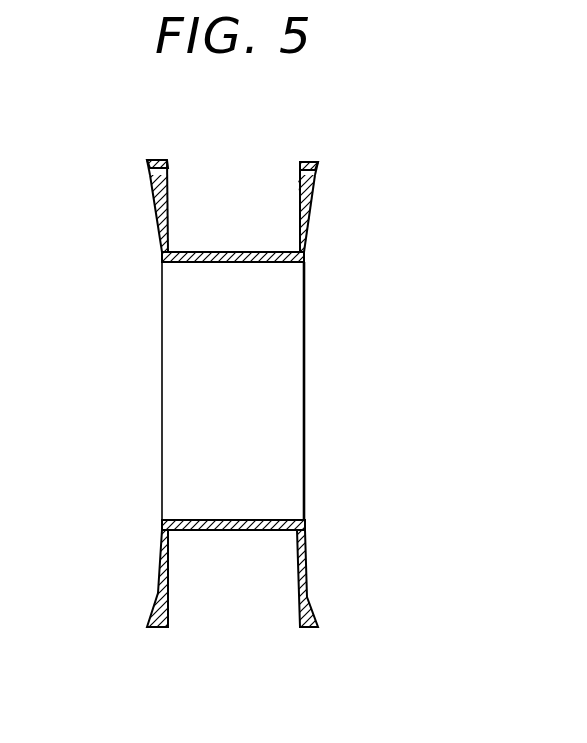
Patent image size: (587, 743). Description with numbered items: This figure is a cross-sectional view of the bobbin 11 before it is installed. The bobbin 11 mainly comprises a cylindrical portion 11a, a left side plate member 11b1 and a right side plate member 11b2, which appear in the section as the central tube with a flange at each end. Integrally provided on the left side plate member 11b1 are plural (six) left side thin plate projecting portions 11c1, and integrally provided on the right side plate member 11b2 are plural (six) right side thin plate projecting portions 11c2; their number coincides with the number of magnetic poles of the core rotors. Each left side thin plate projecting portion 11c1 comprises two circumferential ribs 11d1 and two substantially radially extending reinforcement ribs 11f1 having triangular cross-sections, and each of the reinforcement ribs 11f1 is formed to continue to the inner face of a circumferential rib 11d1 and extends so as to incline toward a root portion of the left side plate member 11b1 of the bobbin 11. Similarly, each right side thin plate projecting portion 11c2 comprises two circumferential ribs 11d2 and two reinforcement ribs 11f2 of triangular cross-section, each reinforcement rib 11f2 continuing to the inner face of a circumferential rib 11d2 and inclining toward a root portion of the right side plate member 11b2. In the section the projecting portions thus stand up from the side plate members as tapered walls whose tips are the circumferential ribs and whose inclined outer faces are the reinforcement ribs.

The bobbin 11 is at (278, 372).
The cylindrical portion 11a is at (203, 533).
The left side plate member 11b1 is at (160, 228).
The right side plate member 11b2 is at (305, 232).
The left side thin plate projecting portion 11c1 is at (170, 185).
The right side thin plate projecting portion 11c2 is at (297, 173).
The circumferential rib 11d1 is at (155, 160).
The circumferential rib 11d2 is at (308, 162).
The reinforcement rib 11f1 is at (155, 182).
The reinforcement rib 11f2 is at (317, 182).